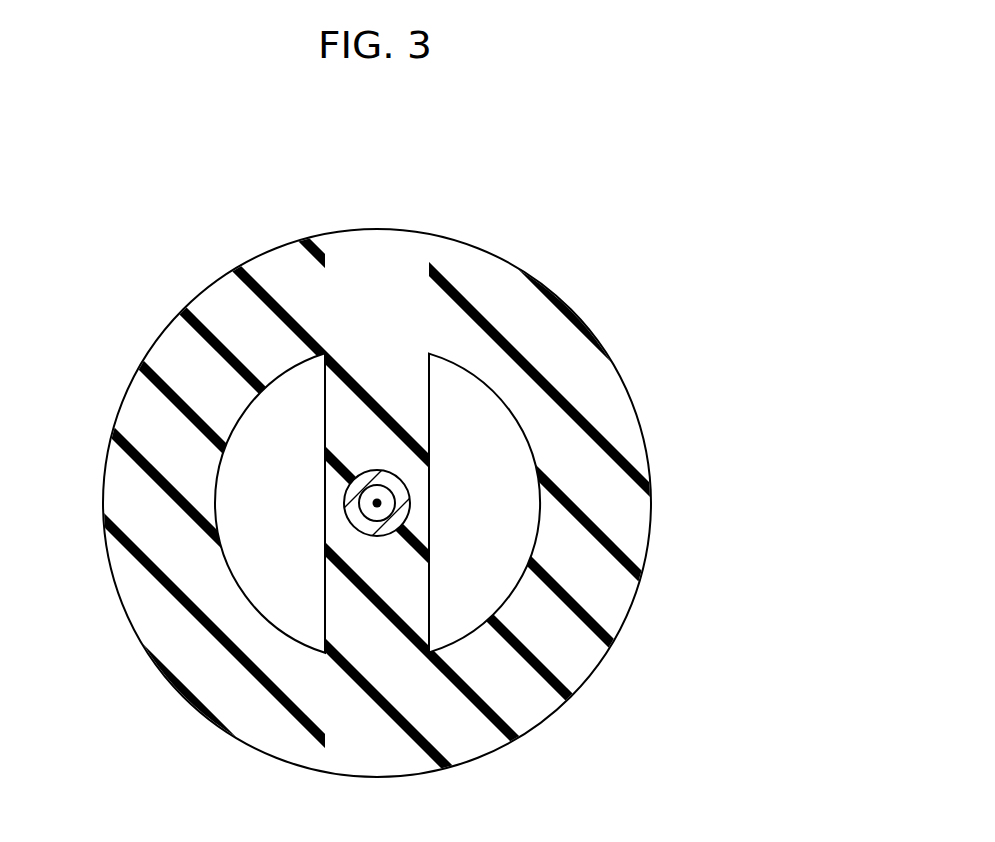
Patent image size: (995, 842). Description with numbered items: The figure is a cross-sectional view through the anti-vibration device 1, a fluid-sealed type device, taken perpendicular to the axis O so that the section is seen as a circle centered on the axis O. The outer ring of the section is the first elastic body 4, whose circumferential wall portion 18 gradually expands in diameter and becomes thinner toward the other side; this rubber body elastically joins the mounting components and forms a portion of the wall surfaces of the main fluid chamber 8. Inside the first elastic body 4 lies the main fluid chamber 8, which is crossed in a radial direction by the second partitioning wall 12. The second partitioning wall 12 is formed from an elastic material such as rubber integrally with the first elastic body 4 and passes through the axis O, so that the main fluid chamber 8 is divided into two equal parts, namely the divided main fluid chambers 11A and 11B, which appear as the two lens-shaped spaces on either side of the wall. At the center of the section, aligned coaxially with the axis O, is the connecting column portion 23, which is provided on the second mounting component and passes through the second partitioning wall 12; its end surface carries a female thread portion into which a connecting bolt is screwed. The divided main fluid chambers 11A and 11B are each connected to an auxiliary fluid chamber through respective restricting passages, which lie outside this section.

The anti-vibration device 1 is at (608, 147).
The first elastic body 4 is at (642, 407).
The main fluid chamber 8 is at (467, 503).
The divided main fluid chamber 11A is at (293, 518).
The divided main fluid chamber 11B is at (457, 518).
The second partitioning wall 12 is at (412, 398).
The circumferential wall portion 18 is at (125, 477).
The connecting column portion 23 is at (352, 493).
The axis O is at (377, 503).